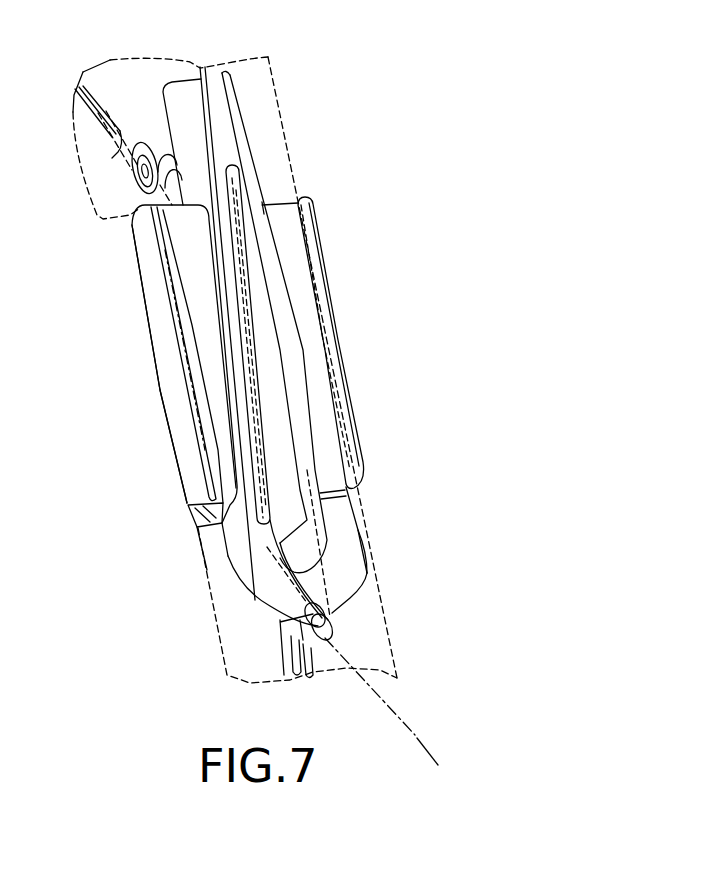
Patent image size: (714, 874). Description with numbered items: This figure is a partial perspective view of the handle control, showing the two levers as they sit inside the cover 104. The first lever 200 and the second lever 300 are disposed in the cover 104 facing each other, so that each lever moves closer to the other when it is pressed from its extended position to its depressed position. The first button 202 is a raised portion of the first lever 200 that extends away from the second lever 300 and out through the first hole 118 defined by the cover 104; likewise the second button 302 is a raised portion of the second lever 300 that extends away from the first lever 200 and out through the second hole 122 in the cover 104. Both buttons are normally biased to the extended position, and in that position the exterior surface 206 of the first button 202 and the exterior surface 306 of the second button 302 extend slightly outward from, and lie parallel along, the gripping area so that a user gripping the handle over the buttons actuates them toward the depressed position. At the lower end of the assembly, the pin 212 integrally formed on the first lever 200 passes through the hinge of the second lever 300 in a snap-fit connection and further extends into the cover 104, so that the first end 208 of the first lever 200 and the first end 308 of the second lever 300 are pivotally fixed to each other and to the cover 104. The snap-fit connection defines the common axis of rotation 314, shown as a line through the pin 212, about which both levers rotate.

The cover 104 is at (268, 117).
The first hole 118 is at (190, 509).
The second hole 122 is at (308, 240).
The first lever 200 is at (228, 535).
The first button 202 is at (198, 294).
The exterior surface of the first button 206 is at (168, 387).
The first end of the first lever 208 is at (258, 590).
The pin 212 is at (328, 618).
The second lever 300 is at (340, 517).
The second button 302 is at (302, 295).
The exterior surface of the second button 306 is at (342, 350).
The first end of the second lever 308 is at (352, 573).
The common axis of rotation 314 is at (420, 740).